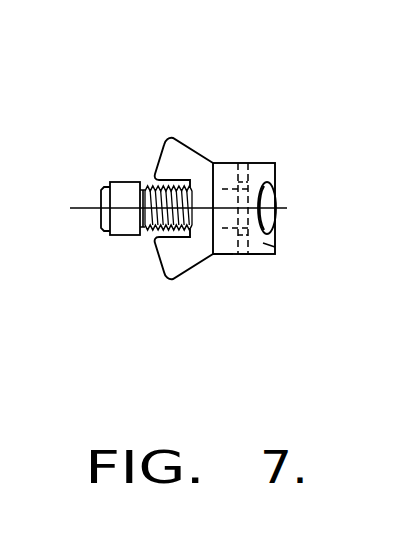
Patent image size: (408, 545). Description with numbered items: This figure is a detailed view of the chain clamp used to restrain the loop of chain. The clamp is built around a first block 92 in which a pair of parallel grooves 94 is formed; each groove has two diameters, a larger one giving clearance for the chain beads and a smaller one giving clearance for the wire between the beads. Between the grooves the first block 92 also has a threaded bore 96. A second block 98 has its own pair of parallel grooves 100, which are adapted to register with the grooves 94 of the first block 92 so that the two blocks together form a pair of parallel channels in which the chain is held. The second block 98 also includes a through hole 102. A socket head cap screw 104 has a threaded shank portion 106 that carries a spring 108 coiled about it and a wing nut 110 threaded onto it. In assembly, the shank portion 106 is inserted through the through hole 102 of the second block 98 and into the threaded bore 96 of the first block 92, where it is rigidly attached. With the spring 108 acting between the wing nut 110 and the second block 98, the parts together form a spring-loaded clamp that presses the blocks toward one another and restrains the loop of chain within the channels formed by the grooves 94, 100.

The first block 92 is at (275, 254).
The pair of parallel grooves 94 is at (243, 163).
The threaded bore 96 is at (277, 216).
The second block 98 is at (221, 256).
The pair of parallel grooves 100 is at (248, 258).
The through hole 102 is at (224, 185).
The socket head cap screw 104 is at (120, 226).
The threaded shank portion 106 is at (172, 160).
The spring 108 is at (150, 237).
The wing nut 110 is at (172, 138).